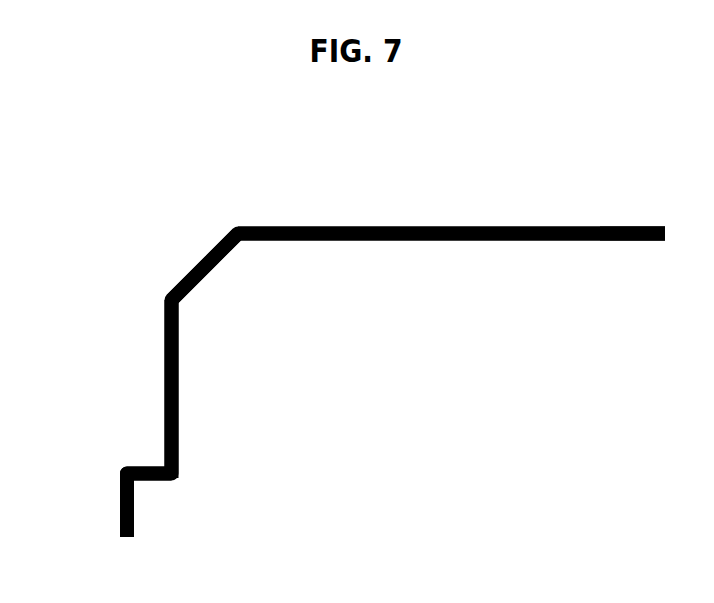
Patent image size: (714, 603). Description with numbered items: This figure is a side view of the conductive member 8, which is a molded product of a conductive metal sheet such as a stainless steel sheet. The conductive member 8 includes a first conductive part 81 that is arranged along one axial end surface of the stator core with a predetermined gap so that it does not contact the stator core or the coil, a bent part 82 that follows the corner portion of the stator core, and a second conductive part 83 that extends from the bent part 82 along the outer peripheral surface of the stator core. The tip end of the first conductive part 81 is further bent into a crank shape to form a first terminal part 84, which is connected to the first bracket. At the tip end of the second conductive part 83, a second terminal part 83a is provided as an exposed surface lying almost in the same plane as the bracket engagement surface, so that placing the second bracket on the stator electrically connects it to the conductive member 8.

The conductive member 8 is at (322, 355).
The first conductive part 81 is at (160, 373).
The bent part 82 is at (200, 253).
The second conductive part 83 is at (412, 224).
The second terminal part 83a is at (622, 226).
The first terminal part 84 is at (120, 506).